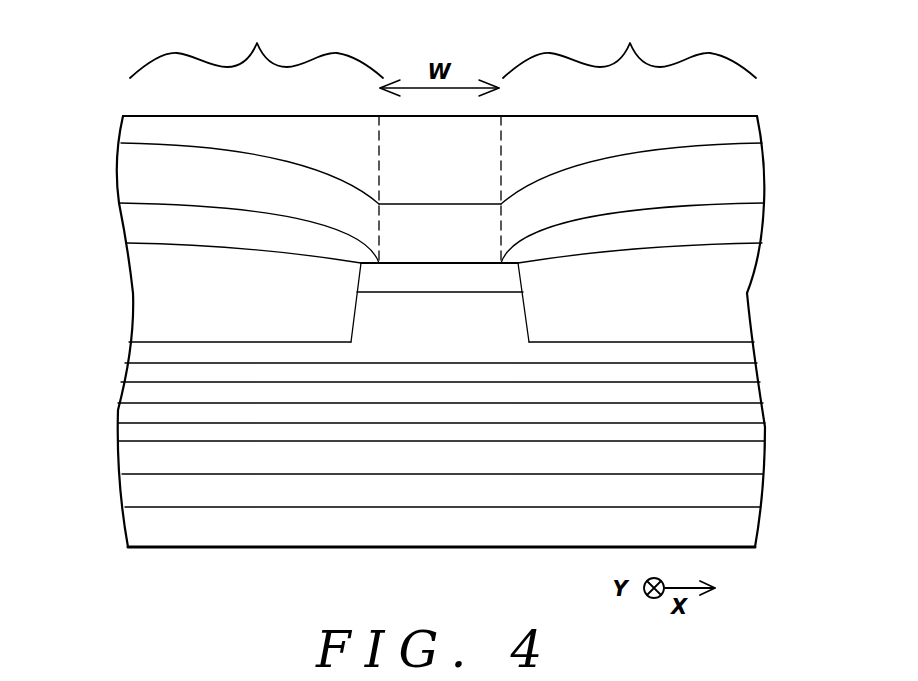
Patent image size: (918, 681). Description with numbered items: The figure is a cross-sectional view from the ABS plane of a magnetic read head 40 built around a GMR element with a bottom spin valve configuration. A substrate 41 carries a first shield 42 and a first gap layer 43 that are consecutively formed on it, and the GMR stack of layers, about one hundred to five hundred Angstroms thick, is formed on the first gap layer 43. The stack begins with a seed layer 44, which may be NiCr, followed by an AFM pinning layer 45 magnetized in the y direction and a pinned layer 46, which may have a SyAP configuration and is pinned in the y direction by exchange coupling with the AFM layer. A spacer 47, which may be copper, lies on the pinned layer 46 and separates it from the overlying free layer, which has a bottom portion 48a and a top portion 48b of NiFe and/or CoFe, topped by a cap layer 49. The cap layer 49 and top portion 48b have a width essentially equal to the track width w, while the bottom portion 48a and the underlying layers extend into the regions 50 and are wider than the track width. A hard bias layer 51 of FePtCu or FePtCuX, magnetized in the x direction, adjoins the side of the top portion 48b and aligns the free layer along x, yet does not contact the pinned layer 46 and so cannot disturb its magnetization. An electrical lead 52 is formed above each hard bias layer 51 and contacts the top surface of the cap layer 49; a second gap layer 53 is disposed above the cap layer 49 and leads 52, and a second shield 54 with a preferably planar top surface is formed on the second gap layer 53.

The magnetic read head 40 is at (116, 110).
The substrate 41 is at (743, 524).
The first shield 42 is at (744, 490).
The first gap layer 43 is at (749, 459).
The seed layer 44 is at (139, 431).
The AFM pinning layer 45 is at (746, 410).
The pinned layer 46 is at (141, 387).
The spacer 47 is at (745, 376).
The bottom portion of free layer 48a is at (740, 349).
The top portion of free layer 48b is at (418, 308).
The cap layer 49 is at (484, 276).
The regions 50 is at (443, 47).
The hard bias layer 51 is at (143, 290).
The electrical lead 52 is at (140, 221).
The second gap layer 53 is at (745, 178).
The second shield 54 is at (740, 118).